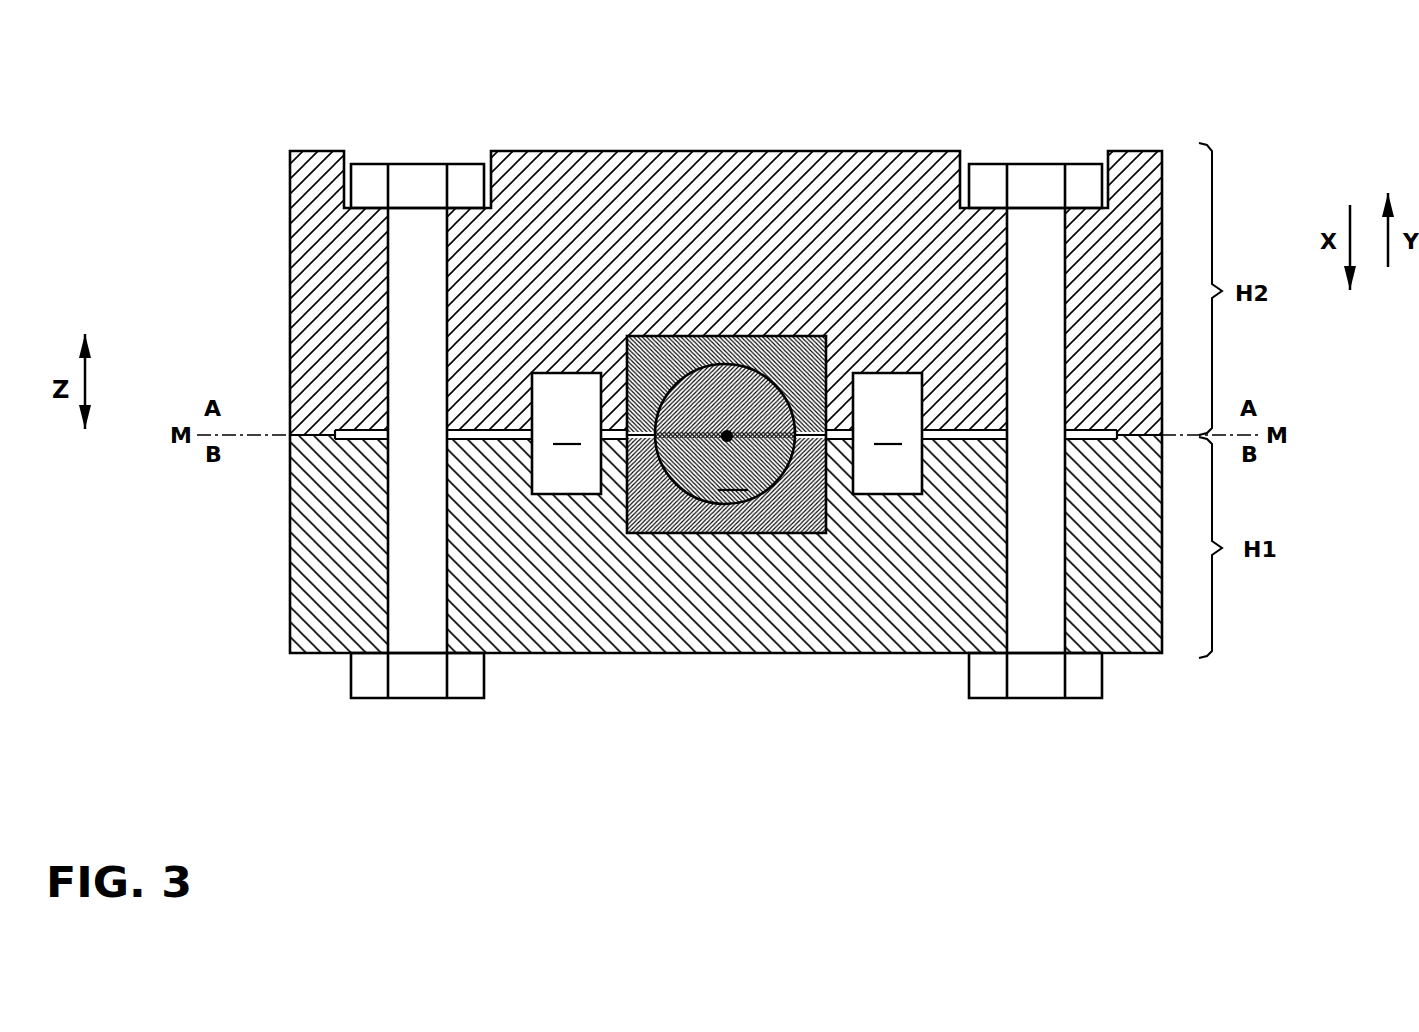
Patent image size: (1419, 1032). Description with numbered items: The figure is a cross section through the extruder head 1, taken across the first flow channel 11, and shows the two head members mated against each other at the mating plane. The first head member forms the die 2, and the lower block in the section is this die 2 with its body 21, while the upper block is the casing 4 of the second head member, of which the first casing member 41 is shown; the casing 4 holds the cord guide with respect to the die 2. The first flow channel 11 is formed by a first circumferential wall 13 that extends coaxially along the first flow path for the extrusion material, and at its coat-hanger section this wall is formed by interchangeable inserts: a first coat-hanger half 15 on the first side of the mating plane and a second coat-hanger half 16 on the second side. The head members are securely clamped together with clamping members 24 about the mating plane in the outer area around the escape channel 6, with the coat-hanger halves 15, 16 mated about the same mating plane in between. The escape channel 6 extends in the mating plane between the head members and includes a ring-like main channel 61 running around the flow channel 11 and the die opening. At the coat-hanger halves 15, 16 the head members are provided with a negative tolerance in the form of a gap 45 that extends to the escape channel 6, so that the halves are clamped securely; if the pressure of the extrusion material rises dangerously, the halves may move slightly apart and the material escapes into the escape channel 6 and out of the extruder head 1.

The extruder head 1 is at (247, 143).
The die 2 is at (291, 557).
The lower body 21 is at (302, 612).
The casing 4 is at (291, 316).
The first casing member 41 is at (311, 248).
The clamping members 24 is at (417, 178).
The gap 45 is at (490, 436).
The escape channel 6 is at (566, 389).
The main channel 61 is at (727, 433).
The first coat-hanger half 15 is at (687, 348).
The first flow channel 11 is at (748, 389).
The second coat-hanger half 16 is at (662, 520).
The first circumferential wall 13 is at (765, 478).